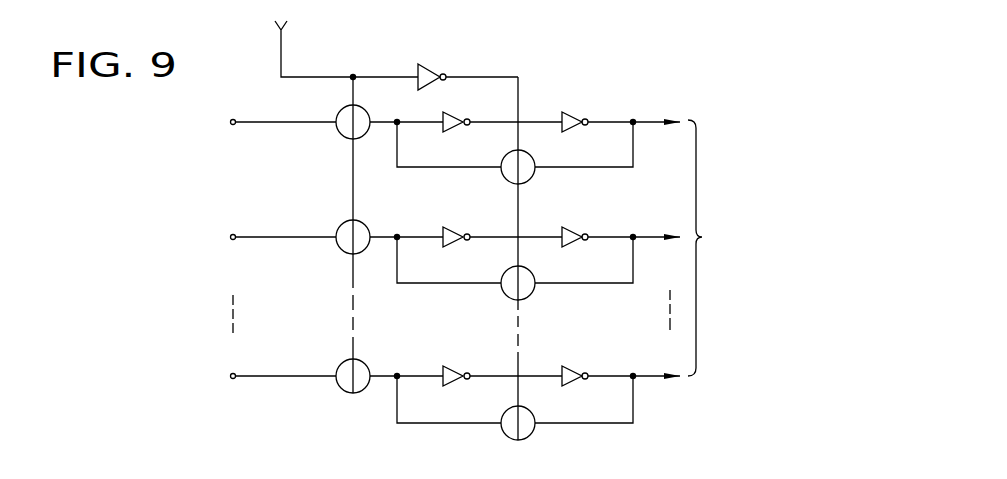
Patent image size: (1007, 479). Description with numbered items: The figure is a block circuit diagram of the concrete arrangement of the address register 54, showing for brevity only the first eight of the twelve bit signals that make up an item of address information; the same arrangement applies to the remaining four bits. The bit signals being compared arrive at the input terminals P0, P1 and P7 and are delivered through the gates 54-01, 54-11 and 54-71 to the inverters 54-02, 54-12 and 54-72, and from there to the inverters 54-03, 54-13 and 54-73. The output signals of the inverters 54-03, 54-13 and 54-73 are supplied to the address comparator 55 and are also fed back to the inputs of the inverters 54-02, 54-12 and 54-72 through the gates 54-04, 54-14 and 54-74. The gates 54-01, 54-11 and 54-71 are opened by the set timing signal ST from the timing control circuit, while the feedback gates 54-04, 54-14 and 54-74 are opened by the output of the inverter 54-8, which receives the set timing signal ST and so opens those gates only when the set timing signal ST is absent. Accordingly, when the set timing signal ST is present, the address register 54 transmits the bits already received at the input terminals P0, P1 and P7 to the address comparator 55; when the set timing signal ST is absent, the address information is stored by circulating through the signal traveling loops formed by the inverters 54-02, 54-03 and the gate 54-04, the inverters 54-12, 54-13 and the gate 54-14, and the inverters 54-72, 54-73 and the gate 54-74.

The address register 54 is at (404, 221).
The inverter 54-8 is at (427, 67).
The gate 54-01 is at (341, 113).
The inverter 54-02 is at (446, 112).
The inverter 54-03 is at (565, 112).
The gate 54-04 is at (531, 155).
The gate 54-11 is at (341, 227).
The inverter 54-12 is at (447, 227).
The inverter 54-13 is at (564, 227).
The gate 54-14 is at (533, 270).
The gate 54-71 is at (341, 367).
The inverter 54-72 is at (447, 367).
The inverter 54-73 is at (565, 367).
The gate 54-74 is at (533, 410).
The address comparator 55 is at (771, 248).
The set timing signal ST is at (281, 54).
The input terminal P0 is at (262, 124).
The input terminal P1 is at (262, 239).
The input terminal P7 is at (262, 378).